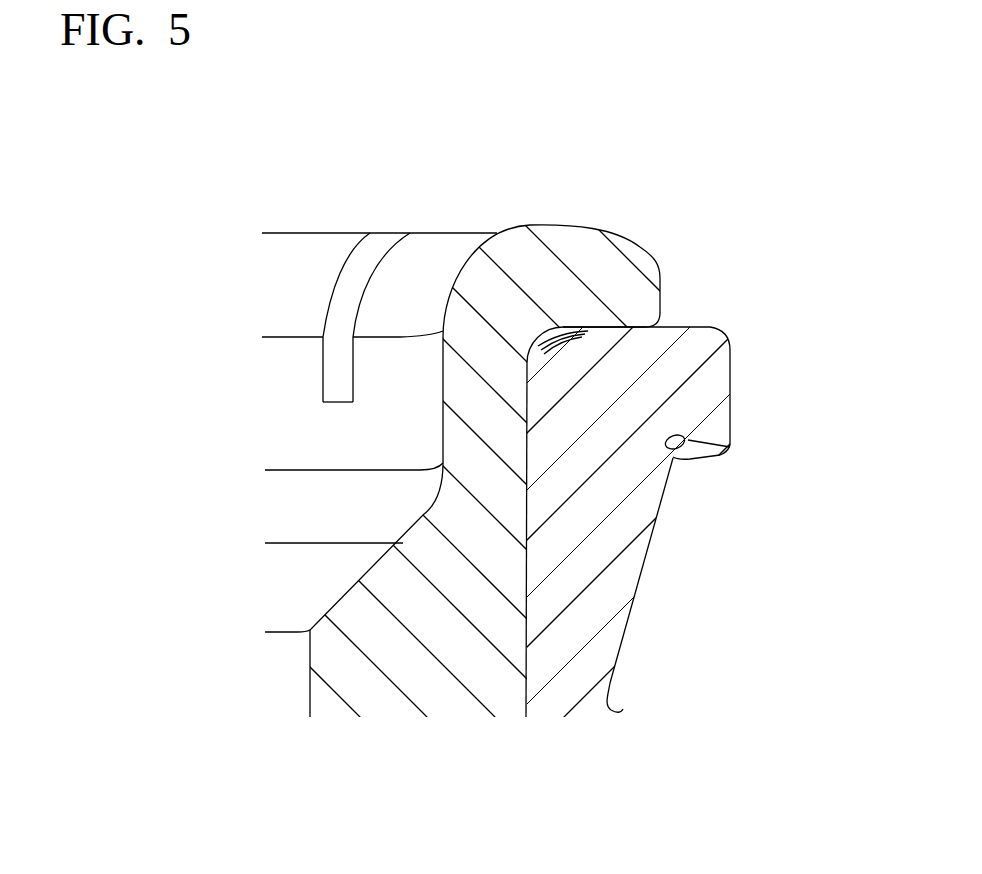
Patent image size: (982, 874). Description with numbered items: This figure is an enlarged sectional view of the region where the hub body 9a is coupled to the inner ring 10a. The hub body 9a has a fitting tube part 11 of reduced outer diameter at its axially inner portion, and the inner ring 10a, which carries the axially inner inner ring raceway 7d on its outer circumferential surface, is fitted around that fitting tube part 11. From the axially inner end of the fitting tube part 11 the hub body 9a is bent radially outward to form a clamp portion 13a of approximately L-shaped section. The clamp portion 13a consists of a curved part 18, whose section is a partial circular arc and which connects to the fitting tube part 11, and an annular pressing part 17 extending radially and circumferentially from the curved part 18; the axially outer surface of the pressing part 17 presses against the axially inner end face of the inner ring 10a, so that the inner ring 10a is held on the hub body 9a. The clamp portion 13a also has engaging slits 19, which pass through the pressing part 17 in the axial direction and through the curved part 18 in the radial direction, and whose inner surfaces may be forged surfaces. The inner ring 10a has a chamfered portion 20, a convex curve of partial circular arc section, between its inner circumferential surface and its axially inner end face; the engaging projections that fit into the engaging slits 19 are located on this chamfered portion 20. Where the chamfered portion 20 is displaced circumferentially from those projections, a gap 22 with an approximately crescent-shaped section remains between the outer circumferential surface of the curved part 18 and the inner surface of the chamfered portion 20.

The inner ring raceway 7d is at (647, 563).
The hub body 9a is at (431, 680).
The inner ring 10a is at (600, 640).
The fitting tube part 11 is at (527, 593).
The clamp portion 13a is at (603, 258).
The pressing part 17 is at (633, 288).
The curved part 18 is at (490, 290).
The engaging slit 19 is at (352, 285).
The chamfered portion 20 is at (545, 347).
The gap 22 is at (568, 327).